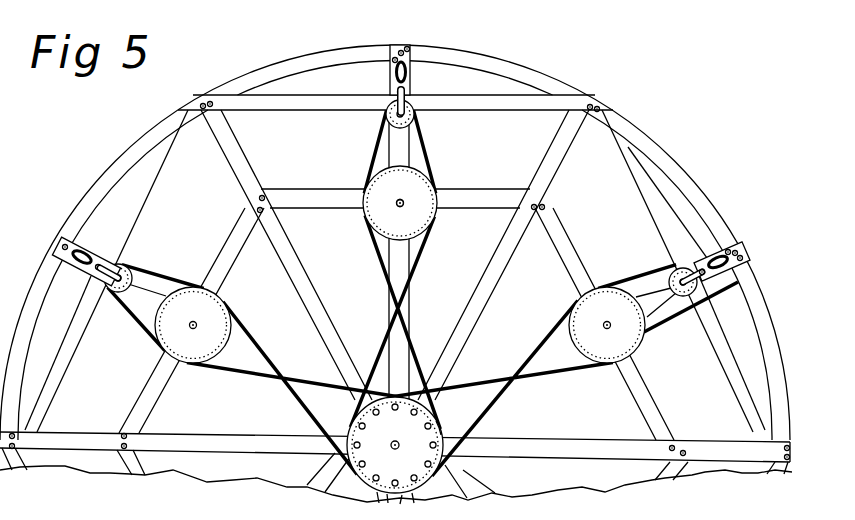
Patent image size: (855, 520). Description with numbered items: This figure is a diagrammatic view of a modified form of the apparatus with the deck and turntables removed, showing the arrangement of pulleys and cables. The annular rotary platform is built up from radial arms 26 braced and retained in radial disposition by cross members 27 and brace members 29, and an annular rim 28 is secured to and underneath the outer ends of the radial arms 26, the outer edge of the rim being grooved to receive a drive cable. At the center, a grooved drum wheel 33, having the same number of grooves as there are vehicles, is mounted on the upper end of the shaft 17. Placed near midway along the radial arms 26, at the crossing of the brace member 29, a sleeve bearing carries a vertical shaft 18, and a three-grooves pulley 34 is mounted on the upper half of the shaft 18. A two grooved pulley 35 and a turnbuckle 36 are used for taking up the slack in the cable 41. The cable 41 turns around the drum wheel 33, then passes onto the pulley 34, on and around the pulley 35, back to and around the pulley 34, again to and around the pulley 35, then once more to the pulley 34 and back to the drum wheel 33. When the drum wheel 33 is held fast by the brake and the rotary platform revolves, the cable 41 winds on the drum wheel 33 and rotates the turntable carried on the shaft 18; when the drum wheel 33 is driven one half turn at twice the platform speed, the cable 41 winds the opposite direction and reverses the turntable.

The shaft 17 is at (398, 448).
The vertical shaft 18 is at (398, 203).
The radial arms 26 is at (315, 290).
The cross members 27 is at (310, 95).
The annular rim 28 is at (514, 70).
The brace member 29 is at (236, 245).
The grooved drum wheel 33 is at (430, 434).
The three-grooves pulley 34 is at (182, 303).
The two grooved pulley 35 is at (127, 268).
The turnbuckle 36 is at (86, 255).
The cable 41 is at (246, 325).